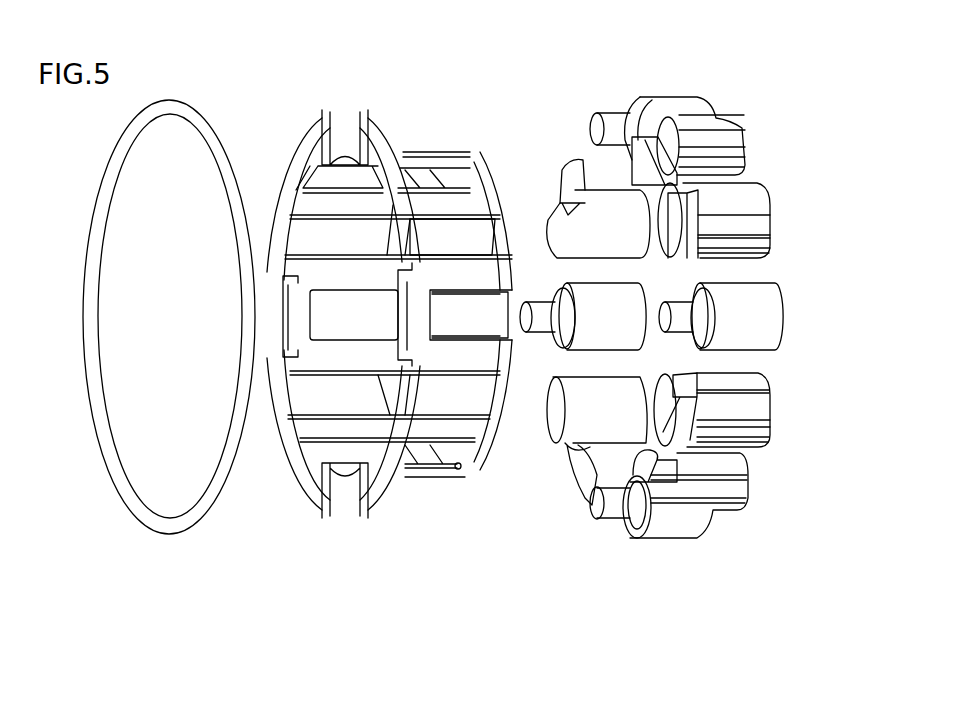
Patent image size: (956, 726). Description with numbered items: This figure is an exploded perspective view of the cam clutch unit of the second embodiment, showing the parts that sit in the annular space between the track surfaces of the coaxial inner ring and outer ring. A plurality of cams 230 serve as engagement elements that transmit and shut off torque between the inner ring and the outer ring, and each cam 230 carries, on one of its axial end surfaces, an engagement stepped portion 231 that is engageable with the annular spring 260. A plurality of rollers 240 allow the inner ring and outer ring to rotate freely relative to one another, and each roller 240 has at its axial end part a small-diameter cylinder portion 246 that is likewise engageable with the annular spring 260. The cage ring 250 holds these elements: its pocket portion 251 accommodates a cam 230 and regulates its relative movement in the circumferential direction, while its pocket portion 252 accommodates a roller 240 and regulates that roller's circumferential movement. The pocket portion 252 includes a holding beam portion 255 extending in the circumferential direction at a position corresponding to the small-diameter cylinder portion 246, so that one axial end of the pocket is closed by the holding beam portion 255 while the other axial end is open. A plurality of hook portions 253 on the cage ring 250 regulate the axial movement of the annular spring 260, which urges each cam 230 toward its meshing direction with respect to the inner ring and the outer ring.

The annular spring 260 is at (112, 175).
The cage ring 250 is at (397, 321).
The pocket portion 251 is at (464, 226).
The pocket portion 252 is at (472, 326).
The hook portion 253 is at (378, 143).
The holding beam portion 255 is at (357, 477).
The cam 230 is at (693, 317).
The engagement stepped portion 231 is at (676, 215).
The roller 240 is at (680, 299).
The small-diameter cylinder portion 246 is at (680, 317).